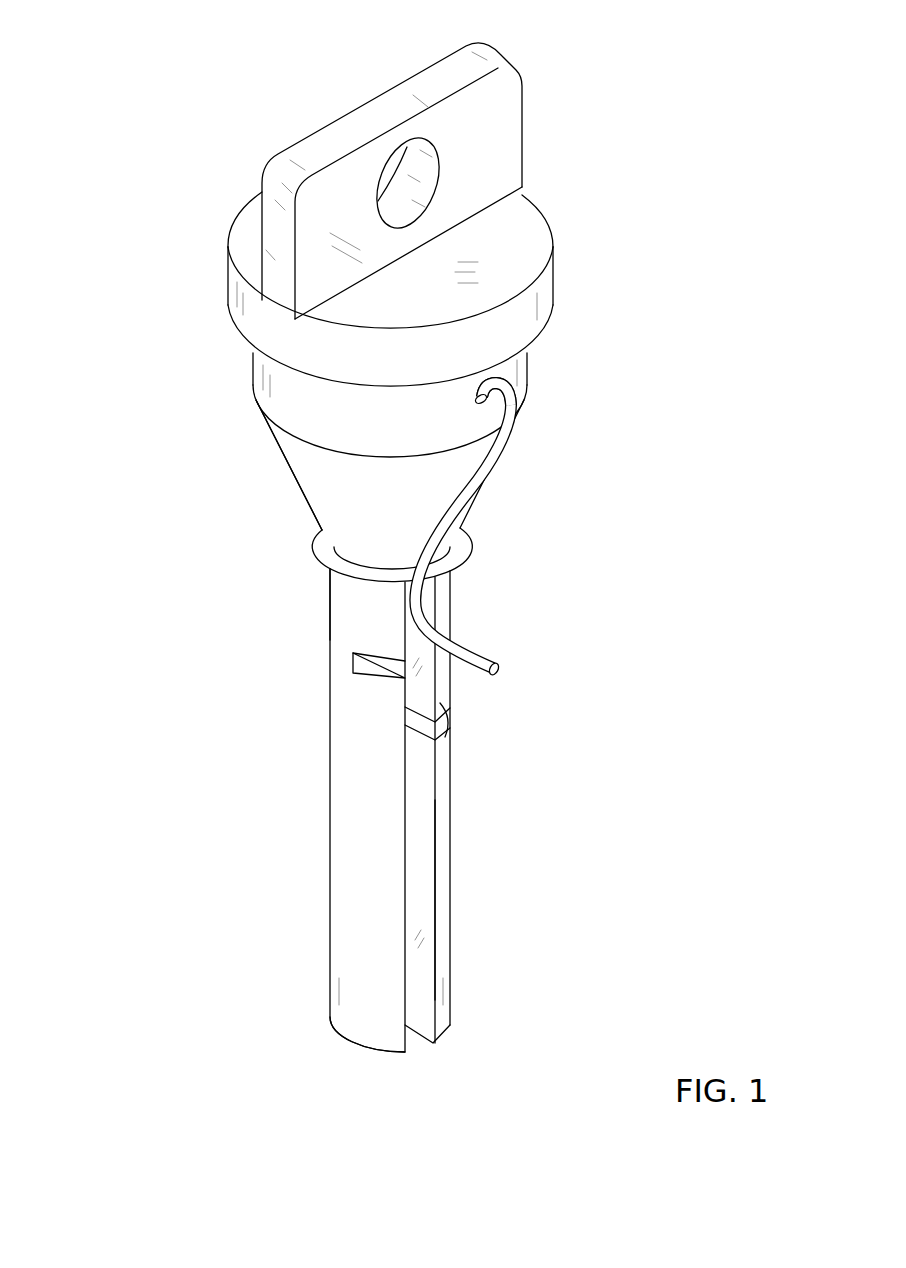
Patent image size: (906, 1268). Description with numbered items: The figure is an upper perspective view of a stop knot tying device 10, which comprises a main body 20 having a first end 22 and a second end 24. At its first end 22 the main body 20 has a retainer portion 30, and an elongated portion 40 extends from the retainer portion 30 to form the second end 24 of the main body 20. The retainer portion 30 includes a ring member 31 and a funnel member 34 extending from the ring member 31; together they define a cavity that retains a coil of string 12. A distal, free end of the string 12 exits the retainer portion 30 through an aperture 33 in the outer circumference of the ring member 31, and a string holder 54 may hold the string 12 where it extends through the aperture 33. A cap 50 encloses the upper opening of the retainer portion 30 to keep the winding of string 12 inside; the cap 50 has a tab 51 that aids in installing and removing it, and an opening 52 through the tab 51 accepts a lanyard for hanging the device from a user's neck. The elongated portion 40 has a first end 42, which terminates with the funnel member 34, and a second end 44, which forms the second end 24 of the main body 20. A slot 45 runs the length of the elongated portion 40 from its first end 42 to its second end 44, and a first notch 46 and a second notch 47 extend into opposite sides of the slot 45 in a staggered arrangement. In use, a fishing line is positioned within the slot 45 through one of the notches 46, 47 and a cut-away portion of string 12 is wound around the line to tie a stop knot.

The stop knot tying device 10 is at (160, 95).
The string 12 is at (516, 529).
The main body 20 is at (299, 824).
The first end 22 is at (253, 362).
The second end 24 is at (353, 1045).
The retainer portion 30 is at (409, 434).
The ring member 31 is at (318, 412).
The aperture 33 is at (510, 393).
The funnel member 34 is at (373, 488).
The elongated portion 40 is at (484, 807).
The first end 42 is at (340, 585).
The second end 44 is at (450, 1033).
The slot 45 is at (418, 884).
The first notch 46 is at (372, 673).
The second notch 47 is at (447, 733).
The cap 50 is at (527, 242).
The tab 51 is at (492, 118).
The opening 52 is at (427, 173).
The string holder 54 is at (462, 545).